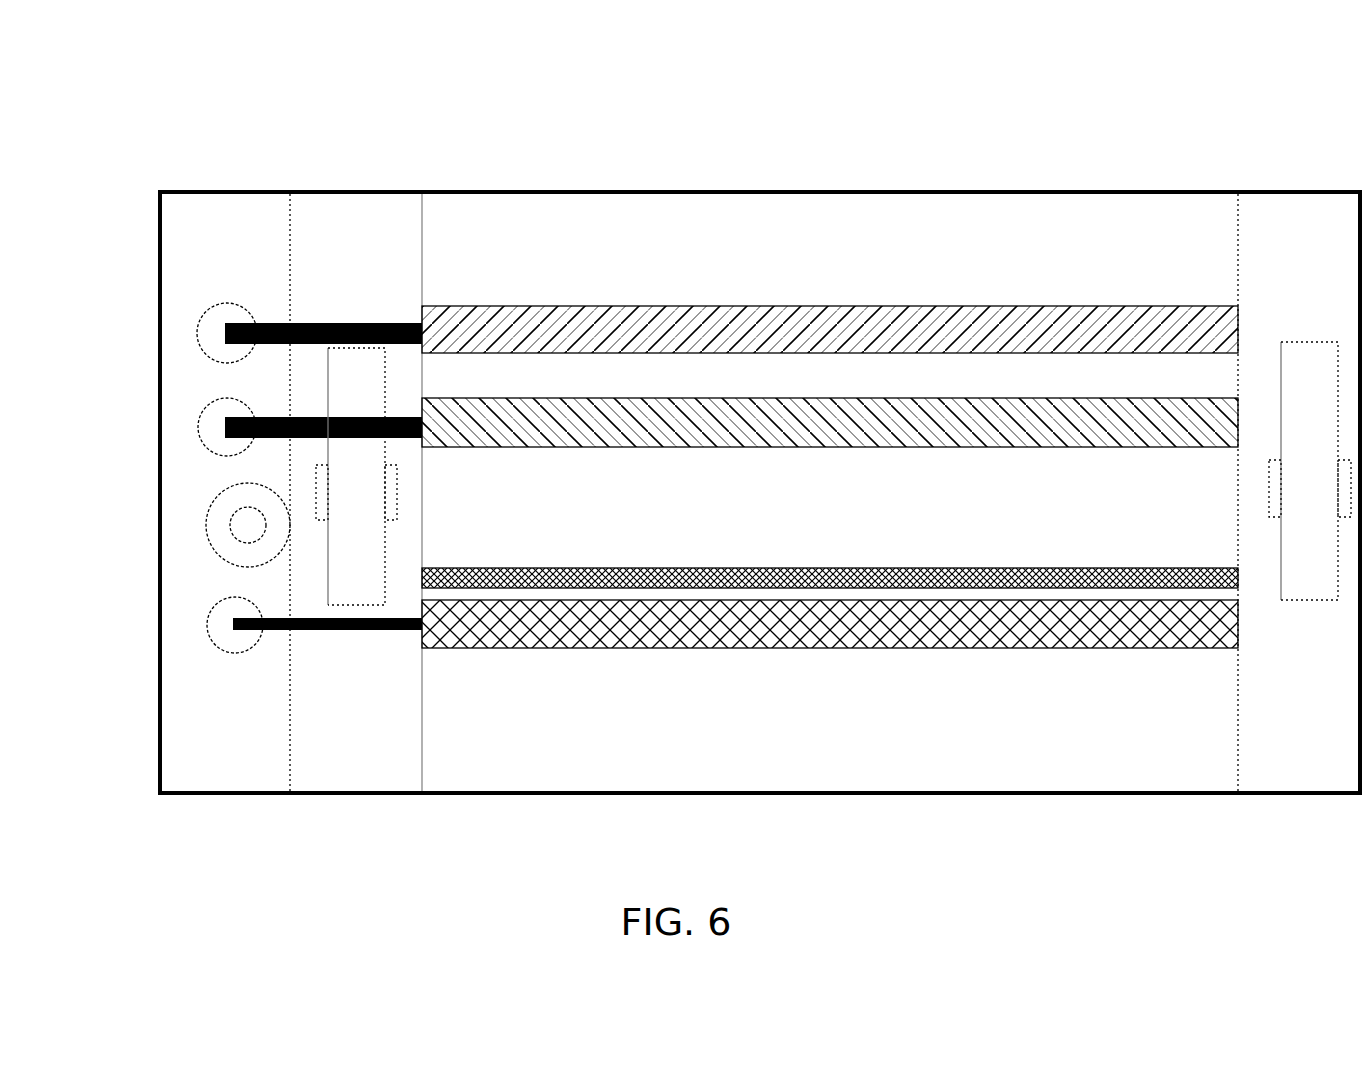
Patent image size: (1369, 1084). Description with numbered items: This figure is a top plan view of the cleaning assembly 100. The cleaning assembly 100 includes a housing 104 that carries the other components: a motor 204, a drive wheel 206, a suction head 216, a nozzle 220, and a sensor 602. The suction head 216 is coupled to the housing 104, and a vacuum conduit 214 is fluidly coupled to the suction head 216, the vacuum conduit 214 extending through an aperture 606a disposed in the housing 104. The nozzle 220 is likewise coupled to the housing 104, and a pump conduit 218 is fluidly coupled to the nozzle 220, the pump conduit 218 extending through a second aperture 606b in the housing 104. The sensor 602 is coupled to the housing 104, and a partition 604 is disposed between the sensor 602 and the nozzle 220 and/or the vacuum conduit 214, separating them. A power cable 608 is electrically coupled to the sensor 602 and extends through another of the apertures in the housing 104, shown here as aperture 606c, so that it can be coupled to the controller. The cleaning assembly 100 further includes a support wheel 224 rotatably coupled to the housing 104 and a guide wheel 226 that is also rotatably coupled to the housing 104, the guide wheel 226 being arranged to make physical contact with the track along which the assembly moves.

The cleaning assembly 100 is at (932, 117).
The housing 104 is at (225, 192).
The motor 204 is at (403, 222).
The drive wheel 206 is at (343, 573).
The vacuum conduit 214 is at (387, 324).
The suction head 216 is at (722, 306).
The pump conduit 218 is at (403, 437).
The nozzle 220 is at (1003, 447).
The support wheel 224 is at (1310, 362).
The guide wheel 226 is at (250, 525).
The sensor 602 is at (965, 648).
The partition 604 is at (648, 570).
The aperture 606a is at (205, 313).
The aperture 606b is at (197, 427).
The aperture 606c is at (205, 622).
The power cable 608 is at (385, 630).